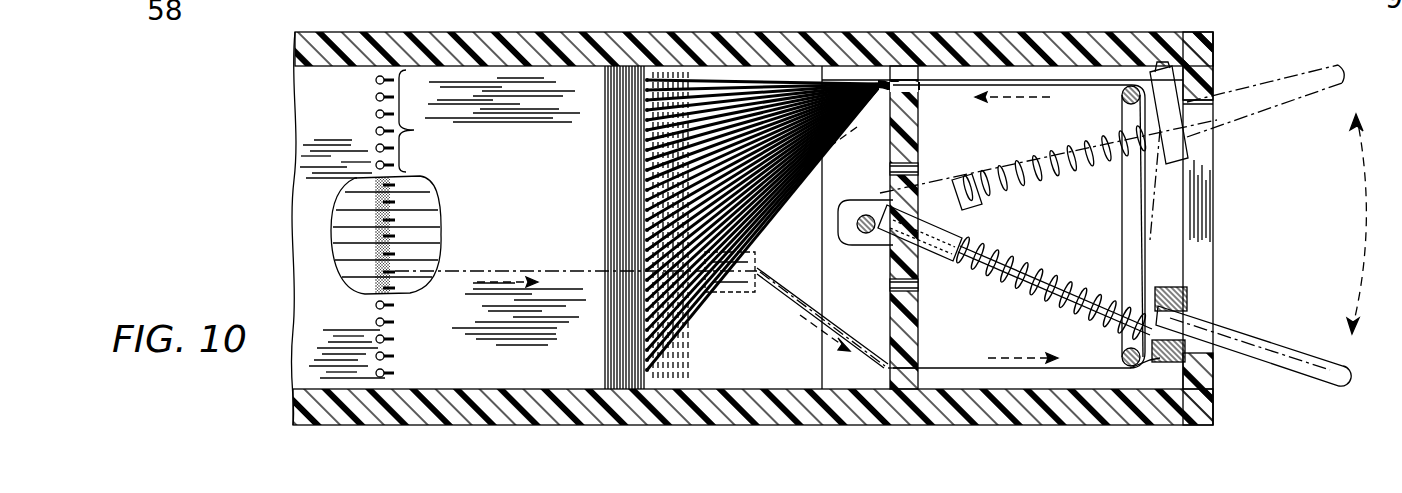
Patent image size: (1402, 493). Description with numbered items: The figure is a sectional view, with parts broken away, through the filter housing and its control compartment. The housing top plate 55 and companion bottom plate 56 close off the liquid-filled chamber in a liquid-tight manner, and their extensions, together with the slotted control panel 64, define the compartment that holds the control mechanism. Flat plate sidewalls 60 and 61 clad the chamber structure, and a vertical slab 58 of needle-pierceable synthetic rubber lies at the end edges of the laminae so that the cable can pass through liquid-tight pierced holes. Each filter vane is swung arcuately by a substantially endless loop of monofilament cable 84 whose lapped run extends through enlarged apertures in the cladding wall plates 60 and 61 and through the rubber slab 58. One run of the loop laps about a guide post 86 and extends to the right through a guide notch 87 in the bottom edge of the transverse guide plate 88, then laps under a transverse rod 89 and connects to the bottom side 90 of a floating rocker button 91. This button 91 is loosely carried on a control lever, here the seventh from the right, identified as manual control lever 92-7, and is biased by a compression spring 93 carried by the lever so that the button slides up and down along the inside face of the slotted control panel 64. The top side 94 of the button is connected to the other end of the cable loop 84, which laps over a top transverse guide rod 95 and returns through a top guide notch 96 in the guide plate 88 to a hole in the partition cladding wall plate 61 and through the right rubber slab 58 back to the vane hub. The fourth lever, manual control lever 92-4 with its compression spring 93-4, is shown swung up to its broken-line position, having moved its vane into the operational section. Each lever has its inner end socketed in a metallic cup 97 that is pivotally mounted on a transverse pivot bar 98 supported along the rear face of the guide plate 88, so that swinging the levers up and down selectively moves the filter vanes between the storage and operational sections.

The housing top plate 55 is at (641, 44).
The companion bottom plate 56 is at (988, 396).
The needle-pierceable synthetic rubber slab 58 is at (372, 268).
The flat plate sidewall 60 is at (535, 216).
The flat plate sidewall 61 is at (730, 371).
The slotted control panel 64 is at (1205, 372).
The monofilament cable 84 is at (413, 130).
The guide post 86 is at (758, 292).
The guide notch 87 is at (912, 385).
The guide plate 88 is at (900, 321).
The transverse rod 89 is at (1122, 352).
The bottom side of rocker button 90 is at (1213, 414).
The floating rocker button 91 is at (1182, 302).
The manual control lever 92-4 is at (1295, 92).
The manual control lever 92-7 is at (1308, 358).
The compression spring 93 is at (1012, 296).
The compression spring 93-4 is at (1088, 176).
The top side of rocker button 94 is at (1188, 292).
The top transverse guide rod 95 is at (1120, 100).
The top guide notch 96 is at (900, 70).
The metallic cup 97 is at (880, 284).
The transverse pivot bar 98 is at (858, 247).